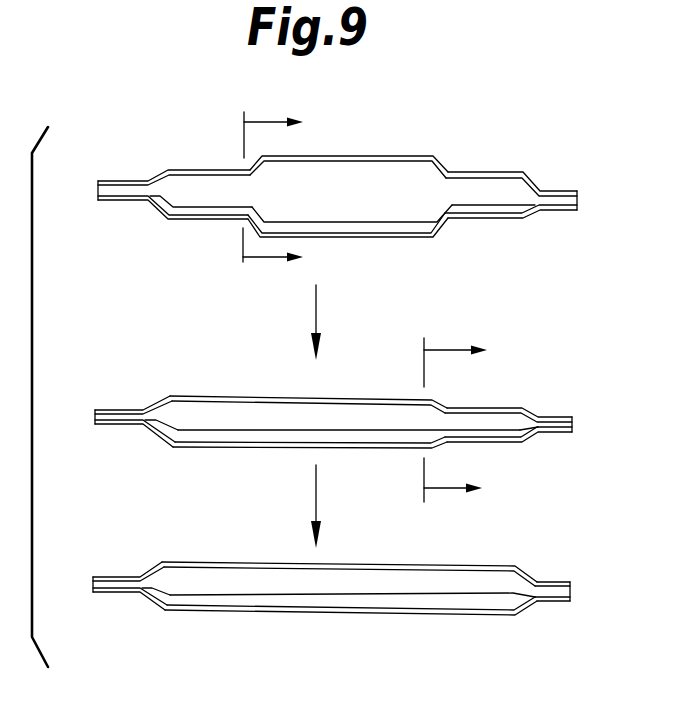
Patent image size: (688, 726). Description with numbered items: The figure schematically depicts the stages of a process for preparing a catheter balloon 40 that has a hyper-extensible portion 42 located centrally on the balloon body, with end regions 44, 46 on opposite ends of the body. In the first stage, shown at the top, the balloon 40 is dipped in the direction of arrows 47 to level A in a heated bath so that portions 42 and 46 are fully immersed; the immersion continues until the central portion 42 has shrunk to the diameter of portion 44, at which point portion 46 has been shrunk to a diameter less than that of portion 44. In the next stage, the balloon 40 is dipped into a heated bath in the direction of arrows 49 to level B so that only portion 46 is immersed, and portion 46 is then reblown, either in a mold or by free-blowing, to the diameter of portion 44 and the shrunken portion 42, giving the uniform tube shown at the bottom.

The balloon 40 is at (335, 395).
The hyper-extensible portion 42 is at (375, 156).
The end region 44 is at (197, 219).
The end region 46 is at (500, 173).
The arrows 47 is at (263, 122).
The arrows 49 is at (447, 350).